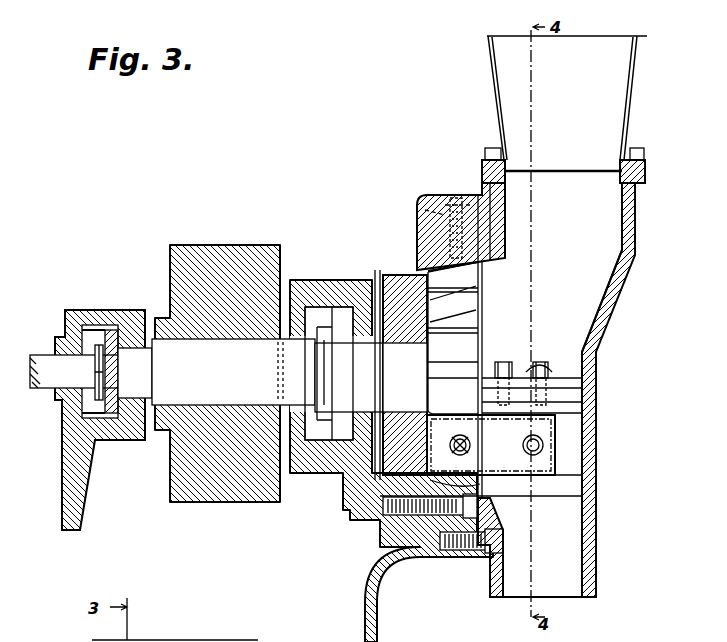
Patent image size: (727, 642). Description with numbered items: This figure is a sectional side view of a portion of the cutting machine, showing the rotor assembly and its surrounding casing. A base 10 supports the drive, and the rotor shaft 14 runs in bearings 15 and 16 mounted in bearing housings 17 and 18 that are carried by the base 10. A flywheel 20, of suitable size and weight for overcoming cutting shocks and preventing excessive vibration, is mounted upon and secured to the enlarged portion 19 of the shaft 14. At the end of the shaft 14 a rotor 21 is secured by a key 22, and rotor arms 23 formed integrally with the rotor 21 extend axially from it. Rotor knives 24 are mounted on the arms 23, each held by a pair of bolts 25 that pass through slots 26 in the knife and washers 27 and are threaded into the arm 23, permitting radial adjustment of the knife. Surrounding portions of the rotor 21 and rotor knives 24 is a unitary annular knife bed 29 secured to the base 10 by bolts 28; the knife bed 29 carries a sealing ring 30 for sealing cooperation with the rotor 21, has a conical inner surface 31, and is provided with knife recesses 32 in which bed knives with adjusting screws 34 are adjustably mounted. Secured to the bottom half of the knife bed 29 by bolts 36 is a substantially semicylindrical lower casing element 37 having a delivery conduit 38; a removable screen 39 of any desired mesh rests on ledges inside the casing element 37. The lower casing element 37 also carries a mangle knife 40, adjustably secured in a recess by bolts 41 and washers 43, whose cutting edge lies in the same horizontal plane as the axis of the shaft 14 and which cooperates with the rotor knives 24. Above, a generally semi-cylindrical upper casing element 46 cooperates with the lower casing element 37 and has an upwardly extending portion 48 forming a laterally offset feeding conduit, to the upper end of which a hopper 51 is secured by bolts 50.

The base 10 is at (384, 636).
The rotor shaft 14 is at (47, 357).
The bearing 15 is at (113, 326).
The bearing 16 is at (338, 304).
The bearing housing 17 is at (85, 314).
The bearing housing 18 is at (305, 280).
The enlarged portion of shaft 19 is at (255, 348).
The flywheel 20 is at (198, 246).
The rotor 21 is at (410, 278).
The key 22 is at (424, 340).
The rotor arm 23 is at (583, 420).
The rotor knife 24 is at (555, 455).
The bolt 25 is at (468, 439).
The slot 26 is at (470, 452).
The washer 27 is at (470, 446).
The bolt 28 is at (410, 548).
The knife bed 29 is at (450, 556).
The sealing ring 30 is at (420, 245).
The conical inner surface 31 is at (480, 268).
The knife recess 32 is at (462, 196).
The adjusting screw 34 is at (420, 208).
The bolt 36 is at (503, 542).
The lower casing element 37 is at (590, 548).
The delivery conduit 38 is at (560, 588).
The screen 39 is at (535, 500).
The mangle knife 40 is at (583, 388).
The bolt 41 is at (518, 361).
The washer 43 is at (540, 368).
The upper casing element 46 is at (610, 305).
The upwardly extending portion 48 is at (636, 230).
The bolt 50 is at (642, 163).
The hopper 51 is at (630, 140).